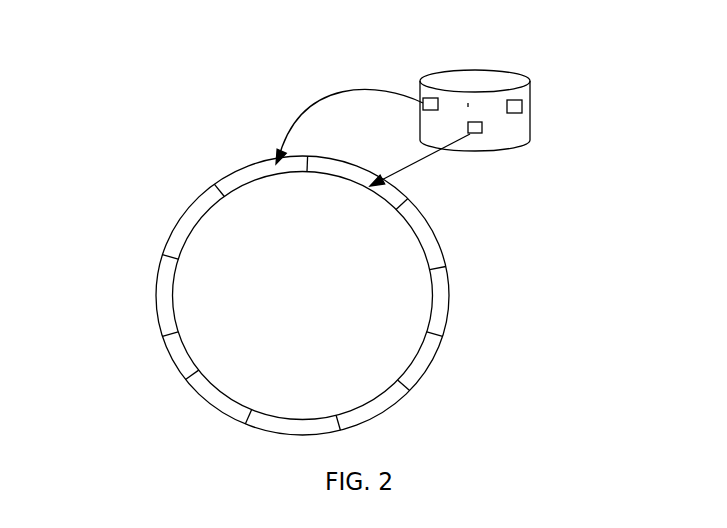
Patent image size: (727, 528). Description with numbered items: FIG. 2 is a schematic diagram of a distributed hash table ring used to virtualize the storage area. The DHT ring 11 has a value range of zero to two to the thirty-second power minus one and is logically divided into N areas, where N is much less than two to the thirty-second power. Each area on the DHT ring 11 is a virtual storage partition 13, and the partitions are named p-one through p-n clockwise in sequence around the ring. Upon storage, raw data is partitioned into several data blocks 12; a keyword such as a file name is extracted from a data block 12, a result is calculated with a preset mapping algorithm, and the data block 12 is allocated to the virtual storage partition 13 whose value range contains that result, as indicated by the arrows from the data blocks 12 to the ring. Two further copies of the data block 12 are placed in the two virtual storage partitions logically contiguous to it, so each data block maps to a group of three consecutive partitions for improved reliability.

The DHT ring 11 is at (135, 362).
The data block 12 is at (512, 106).
The virtual storage partition 13 is at (443, 302).